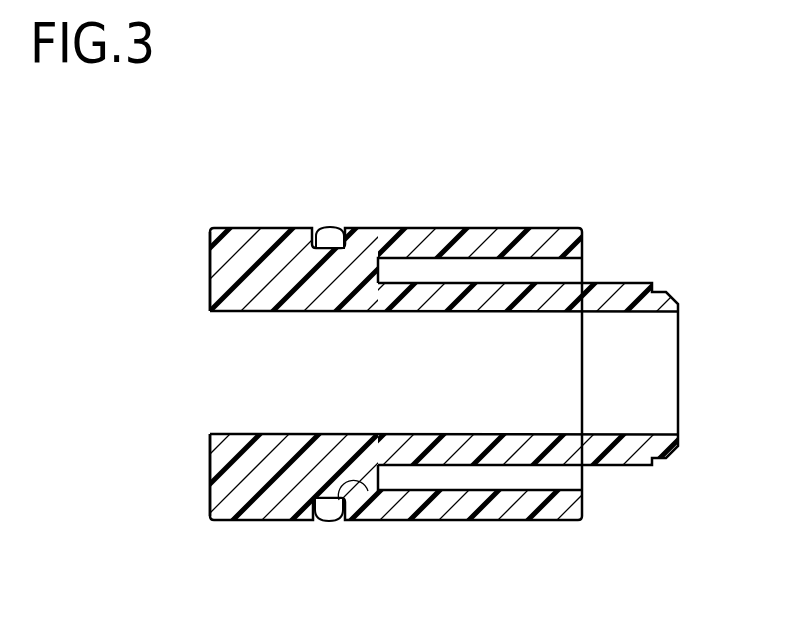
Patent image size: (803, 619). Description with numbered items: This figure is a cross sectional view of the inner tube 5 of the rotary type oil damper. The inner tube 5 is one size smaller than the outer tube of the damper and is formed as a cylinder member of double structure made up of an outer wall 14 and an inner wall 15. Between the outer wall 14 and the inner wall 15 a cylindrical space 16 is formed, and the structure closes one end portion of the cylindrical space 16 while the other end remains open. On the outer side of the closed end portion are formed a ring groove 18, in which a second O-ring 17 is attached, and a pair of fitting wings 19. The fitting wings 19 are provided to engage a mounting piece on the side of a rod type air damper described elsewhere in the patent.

The inner tube 5 is at (242, 189).
The outer wall 14 is at (441, 227).
The inner wall 15 is at (486, 298).
The cylindrical space 16 is at (523, 268).
The second O-ring 17 is at (323, 519).
The ring groove 18 is at (353, 513).
The fitting wings 19 is at (211, 272).